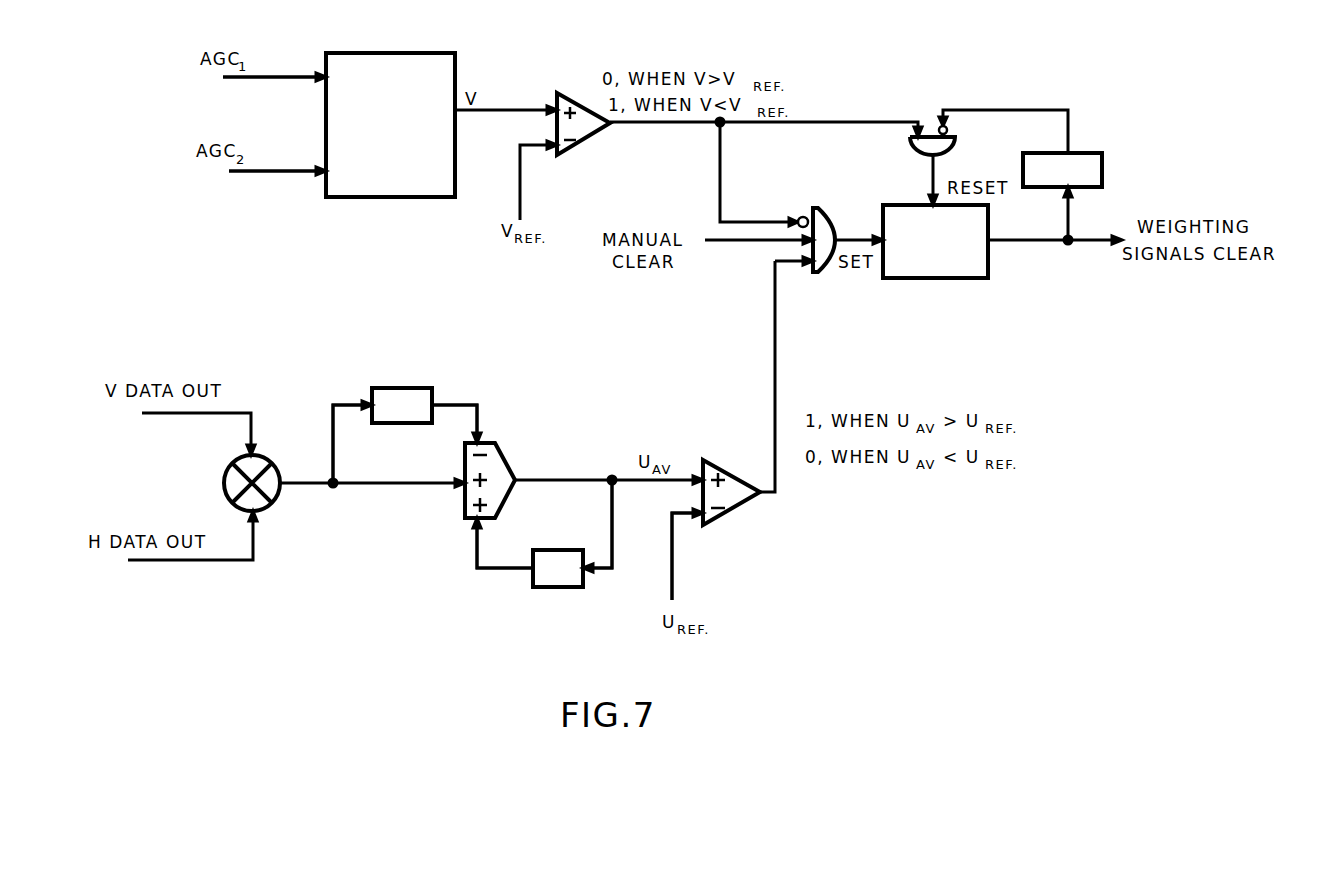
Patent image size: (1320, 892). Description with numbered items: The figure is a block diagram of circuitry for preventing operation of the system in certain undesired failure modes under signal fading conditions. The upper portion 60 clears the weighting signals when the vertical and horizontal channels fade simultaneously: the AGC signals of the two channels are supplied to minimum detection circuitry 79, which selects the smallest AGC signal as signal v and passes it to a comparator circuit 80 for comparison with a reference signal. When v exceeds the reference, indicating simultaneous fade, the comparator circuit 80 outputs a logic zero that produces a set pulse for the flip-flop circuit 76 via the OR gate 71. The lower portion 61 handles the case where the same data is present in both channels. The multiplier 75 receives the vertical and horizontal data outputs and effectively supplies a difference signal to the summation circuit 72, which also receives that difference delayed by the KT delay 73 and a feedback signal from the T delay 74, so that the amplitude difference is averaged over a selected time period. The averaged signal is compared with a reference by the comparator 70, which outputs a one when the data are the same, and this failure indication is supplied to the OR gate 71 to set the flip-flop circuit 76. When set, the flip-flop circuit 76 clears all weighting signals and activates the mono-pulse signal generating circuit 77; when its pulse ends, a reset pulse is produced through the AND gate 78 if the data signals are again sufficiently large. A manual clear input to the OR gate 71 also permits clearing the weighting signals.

The upper portion of the circuitry 60 is at (414, 226).
The minimum detection circuitry 79 is at (366, 52).
The comparator circuit 80 is at (578, 146).
The AND gate 78 is at (912, 147).
The OR gate 71 is at (833, 226).
The flip-flop circuit 76 is at (953, 279).
The mono-pulse signal generating circuit 77 is at (1085, 153).
The multiplier 75 is at (268, 464).
The KT delay 73 is at (388, 388).
The summation circuit 72 is at (505, 453).
The T delay 74 is at (551, 588).
The comparator 70 is at (742, 458).
The lower portion of the circuitry 61 is at (757, 559).